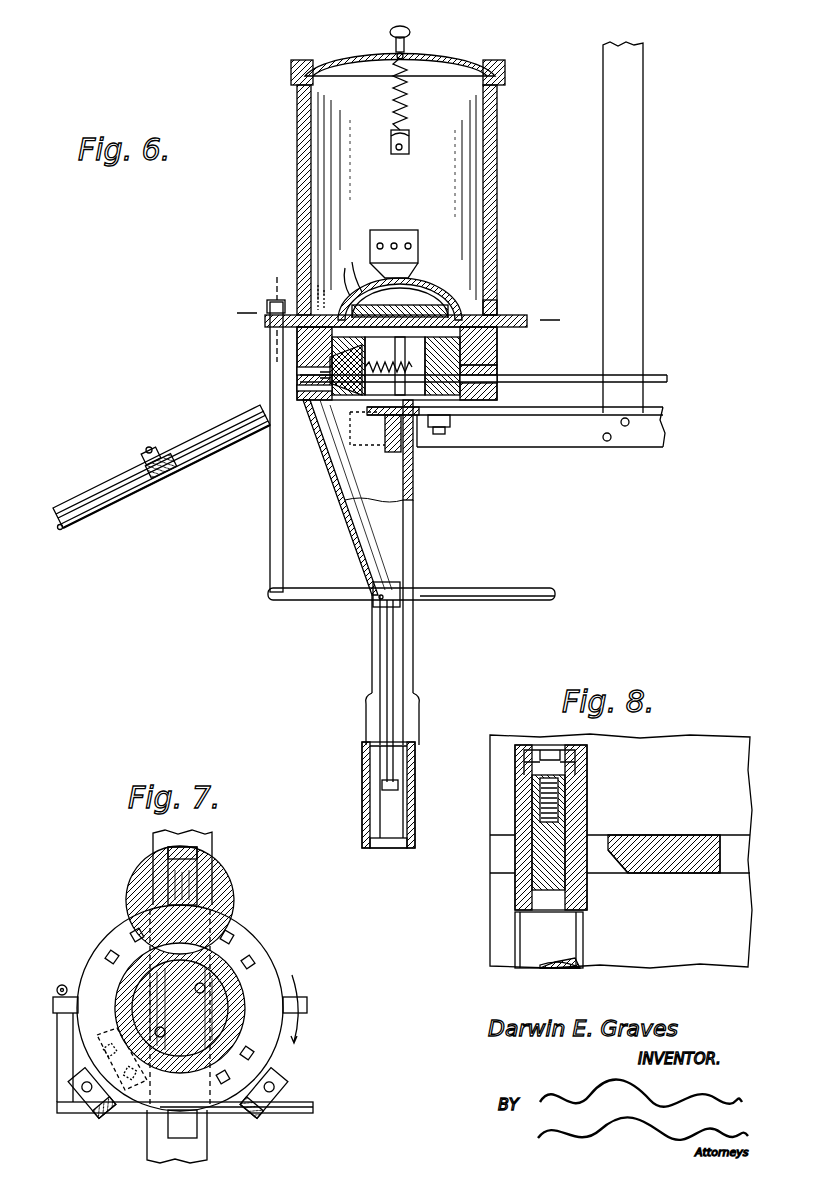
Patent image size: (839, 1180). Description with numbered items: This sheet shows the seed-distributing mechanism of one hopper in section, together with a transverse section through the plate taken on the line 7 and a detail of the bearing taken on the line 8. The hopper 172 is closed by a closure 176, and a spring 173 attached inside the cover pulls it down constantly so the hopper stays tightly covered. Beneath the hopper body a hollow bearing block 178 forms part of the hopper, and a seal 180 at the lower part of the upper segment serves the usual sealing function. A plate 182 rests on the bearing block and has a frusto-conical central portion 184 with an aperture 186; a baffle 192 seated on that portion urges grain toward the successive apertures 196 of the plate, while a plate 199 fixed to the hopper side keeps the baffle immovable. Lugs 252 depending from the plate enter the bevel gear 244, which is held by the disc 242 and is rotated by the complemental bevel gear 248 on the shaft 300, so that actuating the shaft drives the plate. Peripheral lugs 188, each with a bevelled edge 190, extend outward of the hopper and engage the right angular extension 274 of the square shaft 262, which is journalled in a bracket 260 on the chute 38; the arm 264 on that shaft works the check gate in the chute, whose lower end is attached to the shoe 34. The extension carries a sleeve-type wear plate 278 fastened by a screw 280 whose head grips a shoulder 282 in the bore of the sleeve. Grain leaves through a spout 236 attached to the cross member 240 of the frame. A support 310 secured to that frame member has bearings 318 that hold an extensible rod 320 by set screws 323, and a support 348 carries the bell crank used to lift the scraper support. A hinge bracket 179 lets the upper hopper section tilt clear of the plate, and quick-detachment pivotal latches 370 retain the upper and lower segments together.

In FIG. 6, the hopper 172 is at (497, 248).
In FIG. 6, the closure 176 is at (462, 60).
In FIG. 6, the spring 173 is at (410, 102).
In FIG. 6, the plate 199 is at (416, 272).
In FIG. 6, the frusto-conical central portion 184 is at (440, 302).
In FIG. 7, the frusto-conical central portion 184 is at (243, 990).
In FIG. 6, the aperture 186 is at (366, 285).
In FIG. 6, the baffle 192 is at (352, 296).
In FIG. 6, the lugs 252 is at (345, 312).
In FIG. 6, the lugs 188 is at (510, 315).
In FIG. 7, the lugs 188 is at (307, 1004).
In FIG. 8, the lugs 188 is at (656, 838).
In FIG. 6, the plate 182 is at (466, 312).
In FIG. 7, the plate 182 is at (268, 1056).
In FIG. 6, the seal 180 is at (490, 300).
In FIG. 6, the gear 244 is at (497, 348).
In FIG. 6, the bearing block 178 is at (497, 362).
In FIG. 6, the disc 242 is at (378, 364).
In FIG. 6, the bevel gear 248 is at (330, 390).
In FIG. 6, the shaft 300 is at (650, 373).
In FIG. 6, the support 348 is at (643, 192).
In FIG. 6, the cross member 240 is at (410, 440).
In FIG. 7, the cross member 240 is at (207, 1136).
In FIG. 6, the chute 38 is at (415, 522).
In FIG. 6, the right angular extension 274 is at (268, 478).
In FIG. 8, the right angular extension 274 is at (584, 942).
In FIG. 6, the wear plate 278 is at (267, 306).
In FIG. 7, the wear plate 278 is at (61, 984).
In FIG. 8, the wear plate 278 is at (588, 812).
In FIG. 6, the shaft 262 is at (522, 588).
In FIG. 7, the shaft 262 is at (308, 1115).
In FIG. 6, the bracket 260 is at (400, 582).
In FIG. 6, the arm 264 is at (395, 660).
In FIG. 6, the shoe 34 is at (416, 768).
In FIG. 6, the support 310 is at (133, 495).
In FIG. 6, the rod 320 is at (83, 528).
In FIG. 6, the bearings 318 is at (168, 478).
In FIG. 6, the set screws 323 is at (151, 448).
In FIG. 6, the section line 8- 8 is at (264, 286).
In FIG. 6, the section line 7- 7 is at (242, 312).
In FIG. 7, the bracket 179 is at (195, 852).
In FIG. 7, the apertures 196 is at (132, 928).
In FIG. 7, the spout 236 is at (112, 1108).
In FIG. 7, the pivotal latches 370 is at (84, 1112).
In FIG. 8, the shoulder 282 is at (588, 778).
In FIG. 8, the screw 280 is at (536, 752).
In FIG. 8, the bevelled edge 190 is at (618, 860).